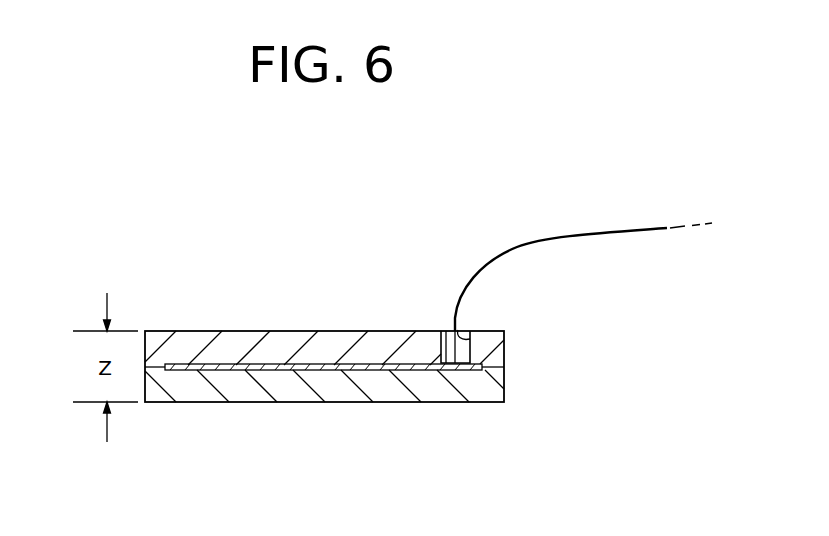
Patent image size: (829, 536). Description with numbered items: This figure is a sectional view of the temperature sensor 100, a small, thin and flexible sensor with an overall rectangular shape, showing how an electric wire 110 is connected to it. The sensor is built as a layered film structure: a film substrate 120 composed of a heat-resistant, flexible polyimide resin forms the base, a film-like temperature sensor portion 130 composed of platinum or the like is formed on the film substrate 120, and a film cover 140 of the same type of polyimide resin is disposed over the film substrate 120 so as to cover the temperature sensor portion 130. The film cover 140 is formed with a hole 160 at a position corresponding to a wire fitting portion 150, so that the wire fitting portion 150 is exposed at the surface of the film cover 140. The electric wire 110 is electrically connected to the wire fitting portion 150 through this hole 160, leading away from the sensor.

The temperature sensor 100 is at (209, 305).
The electric wire 110 is at (550, 247).
The film substrate 120 is at (192, 388).
The temperature sensor portion 130 is at (299, 371).
The film cover 140 is at (333, 343).
The wire fitting portion 150 is at (446, 331).
The hole 160 is at (458, 330).